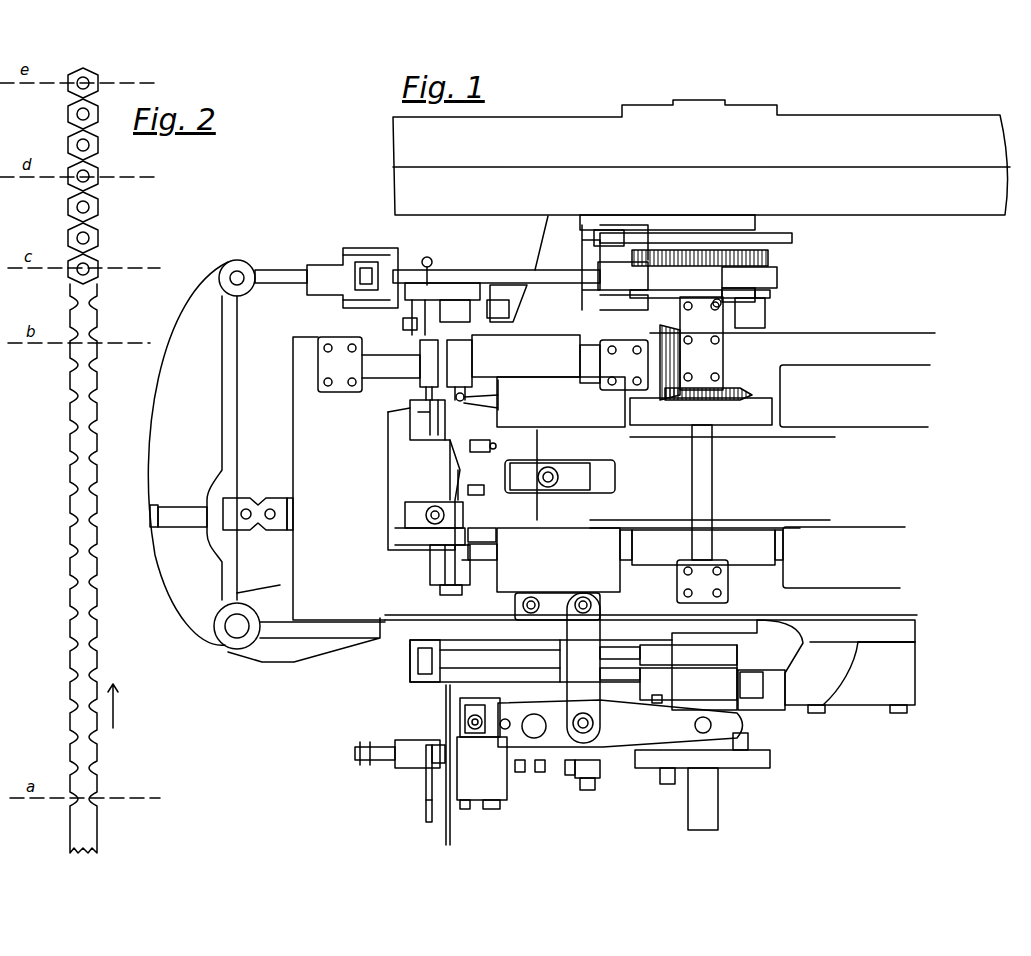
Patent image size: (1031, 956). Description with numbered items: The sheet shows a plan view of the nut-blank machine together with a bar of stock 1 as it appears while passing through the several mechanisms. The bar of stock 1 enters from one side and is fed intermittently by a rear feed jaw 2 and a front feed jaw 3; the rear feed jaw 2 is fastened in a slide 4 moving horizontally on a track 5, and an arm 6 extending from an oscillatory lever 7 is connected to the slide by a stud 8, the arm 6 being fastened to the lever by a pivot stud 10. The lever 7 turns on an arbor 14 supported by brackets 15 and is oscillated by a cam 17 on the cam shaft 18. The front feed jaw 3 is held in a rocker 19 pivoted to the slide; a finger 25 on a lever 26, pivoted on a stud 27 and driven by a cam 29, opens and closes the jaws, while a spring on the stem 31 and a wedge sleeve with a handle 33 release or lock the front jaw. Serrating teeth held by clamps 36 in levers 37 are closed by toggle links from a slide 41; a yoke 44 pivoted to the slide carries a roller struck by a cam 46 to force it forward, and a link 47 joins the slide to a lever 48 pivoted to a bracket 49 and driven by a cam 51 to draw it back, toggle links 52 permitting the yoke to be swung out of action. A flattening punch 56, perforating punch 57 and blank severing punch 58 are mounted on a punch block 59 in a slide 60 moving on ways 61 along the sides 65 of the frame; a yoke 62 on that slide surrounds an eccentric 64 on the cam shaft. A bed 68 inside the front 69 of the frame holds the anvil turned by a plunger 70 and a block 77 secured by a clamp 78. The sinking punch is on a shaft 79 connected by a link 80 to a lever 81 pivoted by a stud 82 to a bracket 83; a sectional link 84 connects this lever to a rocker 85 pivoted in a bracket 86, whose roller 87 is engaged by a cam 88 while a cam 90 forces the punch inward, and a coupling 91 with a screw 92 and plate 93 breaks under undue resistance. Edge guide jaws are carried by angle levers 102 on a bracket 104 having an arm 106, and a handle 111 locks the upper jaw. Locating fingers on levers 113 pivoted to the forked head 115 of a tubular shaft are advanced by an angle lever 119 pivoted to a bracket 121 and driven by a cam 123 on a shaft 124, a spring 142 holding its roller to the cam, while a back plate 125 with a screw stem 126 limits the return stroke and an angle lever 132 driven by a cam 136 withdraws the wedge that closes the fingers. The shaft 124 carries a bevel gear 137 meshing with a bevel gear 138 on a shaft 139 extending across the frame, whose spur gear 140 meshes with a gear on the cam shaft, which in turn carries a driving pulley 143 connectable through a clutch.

In FIG. 2, the bar of stock 1 is at (98, 823).
In FIG. 1, the bar of stock 1 is at (445, 838).
In FIG. 1, the rear feed jaw 2 is at (482, 768).
In FIG. 1, the front feed jaw 3 is at (405, 740).
In FIG. 1, the slide 4 is at (500, 805).
In FIG. 1, the track 5 is at (470, 806).
In FIG. 1, the arm 6 is at (490, 733).
In FIG. 1, the oscillatory lever 7 is at (620, 723).
In FIG. 1, the stud 8 is at (465, 710).
In FIG. 1, the pivot stud 10 is at (570, 775).
In FIG. 1, the arbor 14 is at (583, 711).
In FIG. 1, the brackets 15 is at (557, 668).
In FIG. 1, the cam 17 is at (748, 732).
In FIG. 1, the cam shaft 18 is at (712, 810).
In FIG. 1, the rocker 19 is at (426, 770).
In FIG. 1, the finger 25 is at (540, 772).
In FIG. 1, the lever 26 is at (666, 784).
In FIG. 1, the stud 27 is at (590, 790).
In FIG. 1, the cam 29 is at (770, 760).
In FIG. 1, the stem 31 is at (355, 753).
In FIG. 1, the handle 33 is at (426, 805).
In FIG. 1, the clamps 36 is at (410, 662).
In FIG. 1, the levers 37 is at (651, 648).
In FIG. 1, the slide 41 is at (606, 677).
In FIG. 1, the yoke 44 is at (665, 668).
In FIG. 1, the cam 46 is at (730, 652).
In FIG. 1, the link 47 is at (652, 690).
In FIG. 1, the lever 48 is at (760, 688).
In FIG. 1, the bracket 49 is at (850, 677).
In FIG. 1, the cam 51 is at (688, 684).
In FIG. 1, the toggle links 52 is at (606, 655).
In FIG. 1, the flattening punch 56 is at (496, 530).
In FIG. 1, the perforating punch 57 is at (480, 485).
In FIG. 1, the blank severing punch 58 is at (490, 433).
In FIG. 1, the punch block 59 is at (508, 447).
In FIG. 1, the slide 60 is at (560, 475).
In FIG. 1, the ways 61 is at (615, 412).
In FIG. 1, the yoke 62 is at (762, 460).
In FIG. 1, the eccentric 64 is at (701, 547).
In FIG. 1, the sides 65 is at (631, 468).
In FIG. 1, the bed 68 is at (424, 481).
In FIG. 1, the front 69 is at (339, 478).
In FIG. 1, the plunger 70 is at (497, 555).
In FIG. 1, the block 77 is at (450, 488).
In FIG. 1, the clamp 78 is at (405, 516).
In FIG. 1, the shaft 79 is at (293, 514).
In FIG. 1, the link 80 is at (262, 497).
In FIG. 1, the lever 81 is at (222, 476).
In FIG. 1, the stud 82 is at (232, 632).
In FIG. 1, the bracket 83 is at (290, 660).
In FIG. 1, the sectional link 84 is at (280, 270).
In FIG. 1, the rocker 85 is at (598, 268).
In FIG. 1, the bracket 86 is at (520, 269).
In FIG. 1, the roller 87 is at (598, 228).
In FIG. 1, the cam 88 is at (690, 232).
In FIG. 1, the cam 90 is at (777, 280).
In FIG. 1, the coupling 91 is at (372, 248).
In FIG. 1, the screw 92 is at (360, 280).
In FIG. 1, the plate 93 is at (378, 266).
In FIG. 1, the angle levers 102 is at (395, 537).
In FIG. 1, the bracket 104 is at (430, 565).
In FIG. 1, the arm 106 is at (440, 590).
In FIG. 1, the operating handle 111 is at (470, 565).
In FIG. 1, the levers 113 is at (412, 432).
In FIG. 1, the forked head 115 is at (410, 405).
In FIG. 1, the angle lever 119 is at (403, 324).
In FIG. 1, the bracket 121 is at (420, 385).
In FIG. 1, the cam 123 is at (420, 366).
In FIG. 1, the shaft 124 is at (526, 356).
In FIG. 1, the adjustable inclined back plate 125 is at (498, 395).
In FIG. 1, the screw stem 126 is at (498, 408).
In FIG. 1, the angle lever 132 is at (452, 290).
In FIG. 1, the cam 136 is at (472, 362).
In FIG. 1, the bevel gear 137 is at (700, 344).
In FIG. 1, the bevel gear 138 is at (740, 388).
In FIG. 1, the shaft 139 is at (712, 475).
In FIG. 1, the spur gear 140 is at (768, 258).
In FIG. 1, the spring 142 is at (432, 258).
In FIG. 1, the driving pulley 143 is at (701, 157).